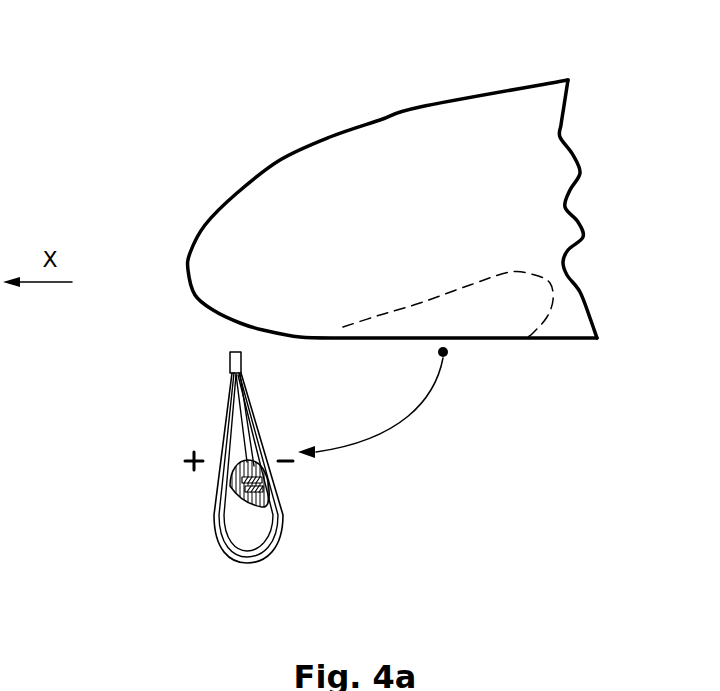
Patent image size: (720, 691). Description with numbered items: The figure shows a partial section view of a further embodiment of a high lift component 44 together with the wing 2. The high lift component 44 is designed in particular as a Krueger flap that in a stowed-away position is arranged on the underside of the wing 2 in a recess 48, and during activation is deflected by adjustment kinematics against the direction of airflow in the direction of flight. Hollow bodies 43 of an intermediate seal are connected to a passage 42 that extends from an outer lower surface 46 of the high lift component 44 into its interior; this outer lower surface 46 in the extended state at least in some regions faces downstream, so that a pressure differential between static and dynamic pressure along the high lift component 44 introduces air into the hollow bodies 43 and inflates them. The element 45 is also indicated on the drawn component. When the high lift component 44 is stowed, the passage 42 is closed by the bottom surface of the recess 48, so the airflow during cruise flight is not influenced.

The wing 2 is at (397, 126).
The passage 42 is at (232, 488).
The hollow bodies 43 is at (258, 552).
The high lift component 44 is at (245, 532).
The strip-shaped sensor / blade element 45 is at (262, 499).
The outer lower surface 46 is at (299, 543).
The recess 48 is at (478, 328).